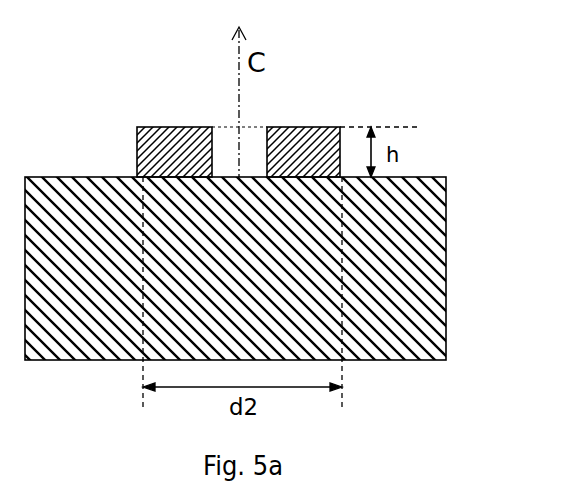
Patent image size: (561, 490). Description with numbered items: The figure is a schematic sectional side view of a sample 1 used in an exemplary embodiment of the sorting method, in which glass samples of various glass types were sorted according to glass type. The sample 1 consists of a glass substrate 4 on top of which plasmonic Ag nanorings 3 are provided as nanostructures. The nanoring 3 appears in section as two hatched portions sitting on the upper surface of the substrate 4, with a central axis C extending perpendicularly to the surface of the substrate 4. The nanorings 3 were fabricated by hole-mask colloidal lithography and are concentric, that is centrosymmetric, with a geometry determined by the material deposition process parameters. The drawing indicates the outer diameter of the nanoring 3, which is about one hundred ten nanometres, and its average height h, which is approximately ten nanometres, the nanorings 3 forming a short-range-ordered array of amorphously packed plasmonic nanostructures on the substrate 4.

The sample 1 is at (68, 147).
The nanoring 3 is at (192, 133).
The glass substrate 4 is at (435, 315).